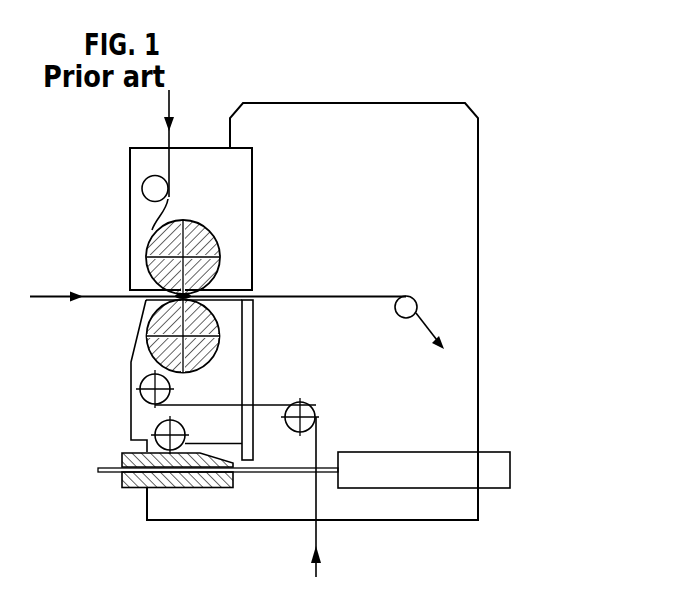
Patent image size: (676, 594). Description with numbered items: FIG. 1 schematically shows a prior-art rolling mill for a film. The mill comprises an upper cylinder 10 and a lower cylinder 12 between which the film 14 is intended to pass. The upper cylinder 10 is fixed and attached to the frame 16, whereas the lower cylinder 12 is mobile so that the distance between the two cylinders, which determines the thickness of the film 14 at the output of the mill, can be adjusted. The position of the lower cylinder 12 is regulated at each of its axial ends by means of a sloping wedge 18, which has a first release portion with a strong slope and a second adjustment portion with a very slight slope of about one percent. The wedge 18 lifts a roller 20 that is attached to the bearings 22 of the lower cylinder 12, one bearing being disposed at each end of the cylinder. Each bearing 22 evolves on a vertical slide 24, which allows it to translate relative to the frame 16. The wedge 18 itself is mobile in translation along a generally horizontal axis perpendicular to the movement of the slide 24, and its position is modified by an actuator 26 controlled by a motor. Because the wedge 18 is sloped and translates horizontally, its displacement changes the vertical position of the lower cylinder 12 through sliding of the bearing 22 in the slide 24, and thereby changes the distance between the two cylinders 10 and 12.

The upper cylinder 10 is at (163, 273).
The lower cylinder 12 is at (163, 321).
The film 14 is at (53, 294).
The frame 16 is at (370, 220).
The sloping wedge 18 is at (138, 478).
The roller 20 is at (160, 432).
The bearings 22 is at (223, 381).
The vertical slide 24 is at (247, 340).
The actuator 26 is at (497, 469).